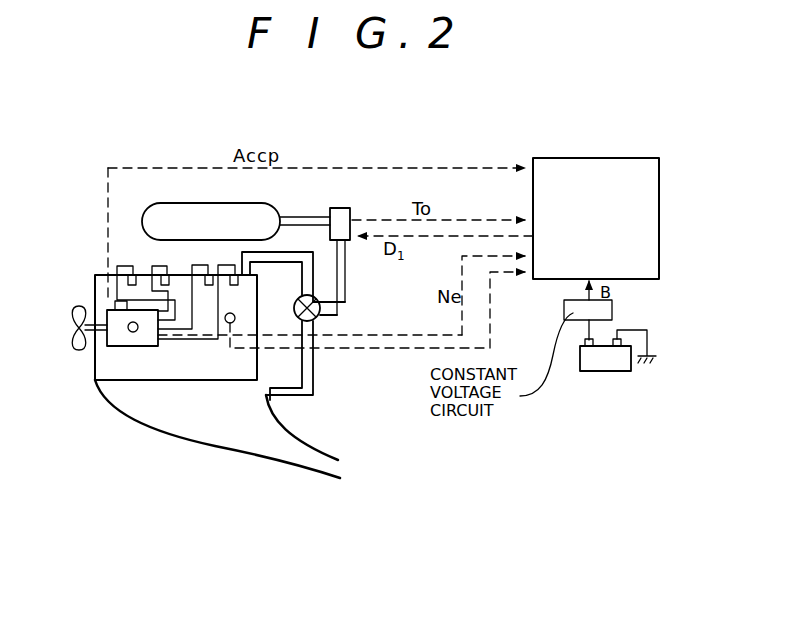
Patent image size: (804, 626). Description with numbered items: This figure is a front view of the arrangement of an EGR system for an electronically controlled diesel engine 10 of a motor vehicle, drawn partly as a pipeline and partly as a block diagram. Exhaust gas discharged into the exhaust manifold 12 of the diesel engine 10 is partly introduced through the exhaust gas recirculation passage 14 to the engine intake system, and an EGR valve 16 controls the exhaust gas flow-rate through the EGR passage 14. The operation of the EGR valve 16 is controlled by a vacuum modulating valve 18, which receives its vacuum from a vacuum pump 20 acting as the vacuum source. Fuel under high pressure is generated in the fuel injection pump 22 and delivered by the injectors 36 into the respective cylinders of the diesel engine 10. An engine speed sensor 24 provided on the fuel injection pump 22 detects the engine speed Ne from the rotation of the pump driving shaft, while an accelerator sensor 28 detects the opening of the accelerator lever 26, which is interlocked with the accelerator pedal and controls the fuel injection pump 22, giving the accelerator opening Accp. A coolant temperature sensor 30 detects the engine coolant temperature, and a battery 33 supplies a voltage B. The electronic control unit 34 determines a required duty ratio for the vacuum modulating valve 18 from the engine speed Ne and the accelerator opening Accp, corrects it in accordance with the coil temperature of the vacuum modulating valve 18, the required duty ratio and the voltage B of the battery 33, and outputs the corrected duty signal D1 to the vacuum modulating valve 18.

The diesel engine 10 is at (112, 415).
The exhaust manifold 12 is at (200, 437).
The exhaust gas recirculation passage 14 is at (318, 380).
The EGR valve 16 is at (298, 299).
The vacuum modulating valve 18 is at (340, 208).
The vacuum pump 20 is at (165, 204).
The fuel injection pump 22 is at (123, 346).
The engine speed sensor 24 is at (136, 332).
The accelerator lever 26 is at (100, 276).
The accelerator sensor 28 is at (115, 305).
The coolant temperature sensor 30 is at (236, 316).
The battery 33 is at (593, 372).
The electronic control unit 34 is at (588, 158).
The injectors 36 is at (141, 260).